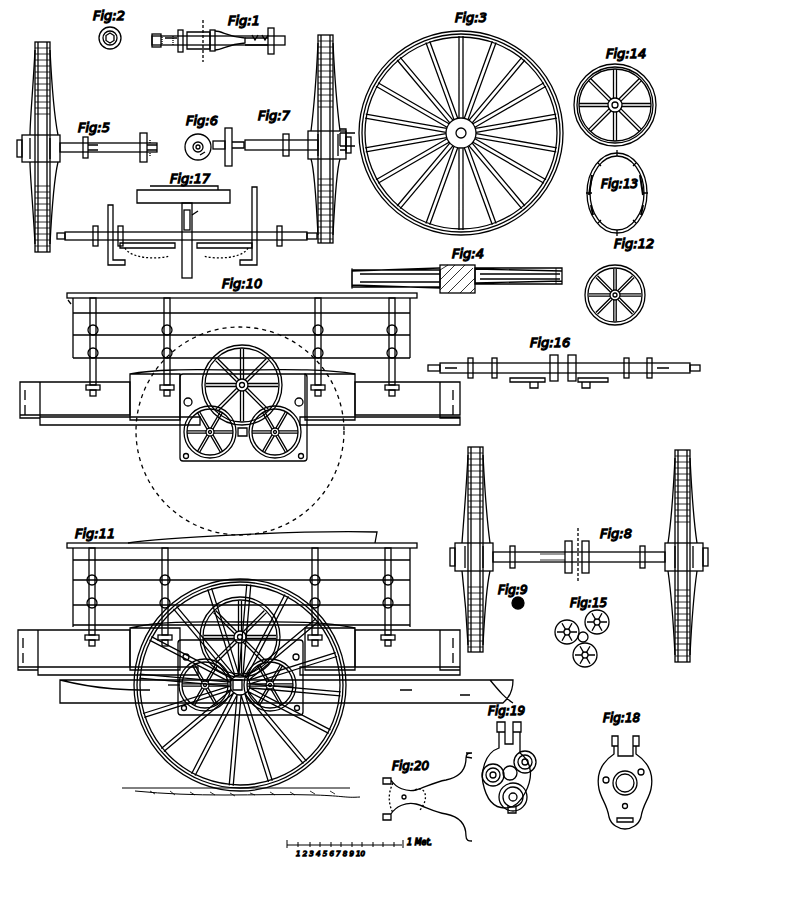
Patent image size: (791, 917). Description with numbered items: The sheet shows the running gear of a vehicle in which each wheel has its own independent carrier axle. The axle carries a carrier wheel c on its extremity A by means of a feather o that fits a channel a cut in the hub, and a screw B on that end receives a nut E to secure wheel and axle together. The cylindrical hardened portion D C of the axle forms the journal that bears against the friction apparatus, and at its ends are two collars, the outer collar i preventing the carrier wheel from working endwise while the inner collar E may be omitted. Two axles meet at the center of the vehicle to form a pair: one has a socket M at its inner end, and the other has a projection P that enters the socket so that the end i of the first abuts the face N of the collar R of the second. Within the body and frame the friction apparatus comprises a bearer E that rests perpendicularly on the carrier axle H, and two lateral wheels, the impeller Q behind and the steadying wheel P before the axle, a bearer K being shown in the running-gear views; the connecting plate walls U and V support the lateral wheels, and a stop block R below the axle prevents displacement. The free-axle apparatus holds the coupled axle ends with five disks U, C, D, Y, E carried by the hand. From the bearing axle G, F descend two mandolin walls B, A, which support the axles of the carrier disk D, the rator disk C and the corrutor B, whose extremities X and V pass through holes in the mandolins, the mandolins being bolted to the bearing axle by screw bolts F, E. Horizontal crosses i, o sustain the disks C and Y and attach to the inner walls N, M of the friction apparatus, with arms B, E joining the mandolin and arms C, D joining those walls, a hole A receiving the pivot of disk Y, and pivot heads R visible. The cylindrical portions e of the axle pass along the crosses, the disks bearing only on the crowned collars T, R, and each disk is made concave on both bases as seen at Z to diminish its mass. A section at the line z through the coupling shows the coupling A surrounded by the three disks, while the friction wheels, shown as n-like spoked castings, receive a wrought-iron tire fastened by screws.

In FIG. 1, the axle extremity A is at (165, 32).
In FIG. 5, the axle extremity A is at (108, 141).
In FIG. 17, the axle extremity A is at (187, 236).
In FIG. 8, the axle extremity A is at (579, 564).
In FIG. 18, the axle extremity A is at (624, 812).
In FIG. 20, the axle extremity A is at (427, 797).
In FIG. 1, the screw B is at (155, 53).
In FIG. 17, the screw B is at (169, 196).
In FIG. 10, the screw B is at (110, 403).
In FIG. 16, the screw B is at (564, 377).
In FIG. 8, the screw B is at (586, 549).
In FIG. 15, the screw B is at (600, 623).
In FIG. 11, the screw B is at (108, 652).
In FIG. 19, the screw B is at (506, 767).
In FIG. 18, the screw B is at (625, 782).
In FIG. 20, the screw B is at (378, 793).
In FIG. 1, the journal portion of carrier axle C is at (218, 40).
In FIG. 10, the journal portion of carrier axle C is at (247, 298).
In FIG. 8, the journal portion of carrier axle C is at (575, 614).
In FIG. 15, the journal portion of carrier axle C is at (564, 634).
In FIG. 11, the journal portion of carrier axle C is at (242, 540).
In FIG. 18, the journal portion of carrier axle C is at (602, 781).
In FIG. 20, the journal portion of carrier axle C is at (451, 758).
In FIG. 1, the journal portion of carrier axle D is at (182, 35).
In FIG. 17, the journal portion of carrier axle D is at (187, 240).
In FIG. 10, the journal portion of carrier axle D is at (380, 403).
In FIG. 15, the journal portion of carrier axle D is at (585, 655).
In FIG. 11, the journal portion of carrier axle D is at (380, 652).
In FIG. 18, the journal portion of carrier axle D is at (644, 773).
In FIG. 20, the journal portion of carrier axle D is at (452, 836).
In FIG. 2, the collar E is at (102, 38).
In FIG. 1, the collar E is at (227, 37).
In FIG. 5, the collar E is at (37, 147).
In FIG. 7, the collar E is at (329, 139).
In FIG. 17, the collar E is at (198, 209).
In FIG. 4, the collar E is at (457, 279).
In FIG. 10, the collar E is at (242, 379).
In FIG. 11, the collar E is at (240, 635).
In FIG. 18, the collar E is at (643, 737).
In FIG. 20, the collar E is at (387, 826).
In FIG. 17, the bearing axle F is at (220, 196).
In FIG. 18, the bearing axle F is at (603, 737).
In FIG. 17, the bearing axle G is at (183, 194).
In FIG. 18, the bearing axle G is at (624, 829).
In FIG. 11, the carrier axle H is at (286, 691).
In FIG. 11, the bearer K is at (240, 685).
In FIG. 5, the socket M is at (164, 146).
In FIG. 6, the socket M is at (193, 145).
In FIG. 17, the socket M is at (251, 233).
In FIG. 6, the collar face N is at (231, 137).
In FIG. 17, the collar face N is at (116, 242).
In FIG. 6, the projection or journal P is at (208, 156).
In FIG. 11, the impeller Q is at (169, 685).
In FIG. 6, the collar R is at (230, 140).
In FIG. 7, the collar R is at (281, 142).
In FIG. 17, the collar R is at (186, 255).
In FIG. 10, the collar R is at (234, 381).
In FIG. 16, the collar R is at (593, 387).
In FIG. 8, the collar R is at (597, 576).
In FIG. 15, the collar R is at (592, 641).
In FIG. 11, the collar R is at (242, 679).
In FIG. 19, the collar R is at (509, 781).
In FIG. 1, the collar T is at (266, 39).
In FIG. 8, the collar T is at (564, 553).
In FIG. 11, the collar T is at (168, 709).
In FIG. 17, the disk U is at (182, 281).
In FIG. 10, the disk U is at (242, 395).
In FIG. 11, the disk U is at (242, 646).
In FIG. 17, the disk axle extremity V is at (184, 224).
In FIG. 17, the disk axle extremity X is at (182, 224).
In FIG. 17, the disk Y is at (225, 254).
In FIG. 10, the concave base Z is at (323, 396).
In FIG. 11, the concave base Z is at (323, 646).
In FIG. 3, the channel a is at (451, 133).
In FIG. 14, the channel a is at (615, 105).
In FIG. 13, the channel a is at (617, 193).
In FIG. 12, the channel a is at (619, 292).
In FIG. 8, the carrier wheel c is at (579, 554).
In FIG. 17, the cylindrical portion of carrier axle e is at (186, 237).
In FIG. 1, the collar of the carrier wheel i is at (185, 35).
In FIG. 5, the collar of the carrier wheel i is at (154, 147).
In FIG. 17, the collar of the carrier wheel i is at (128, 261).
In FIG. 9, the collar of the carrier wheel i is at (517, 603).
In FIG. 10, the pinion n is at (240, 452).
In FIG. 9, the feather o is at (518, 608).
In FIG. 1, the centre line z is at (202, 45).
In FIG. 17, the centre line z is at (184, 270).
In FIG. 8, the centre line z is at (579, 560).